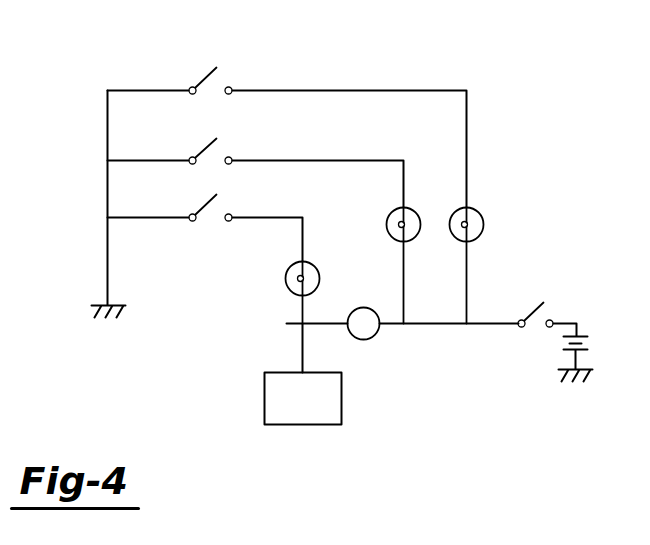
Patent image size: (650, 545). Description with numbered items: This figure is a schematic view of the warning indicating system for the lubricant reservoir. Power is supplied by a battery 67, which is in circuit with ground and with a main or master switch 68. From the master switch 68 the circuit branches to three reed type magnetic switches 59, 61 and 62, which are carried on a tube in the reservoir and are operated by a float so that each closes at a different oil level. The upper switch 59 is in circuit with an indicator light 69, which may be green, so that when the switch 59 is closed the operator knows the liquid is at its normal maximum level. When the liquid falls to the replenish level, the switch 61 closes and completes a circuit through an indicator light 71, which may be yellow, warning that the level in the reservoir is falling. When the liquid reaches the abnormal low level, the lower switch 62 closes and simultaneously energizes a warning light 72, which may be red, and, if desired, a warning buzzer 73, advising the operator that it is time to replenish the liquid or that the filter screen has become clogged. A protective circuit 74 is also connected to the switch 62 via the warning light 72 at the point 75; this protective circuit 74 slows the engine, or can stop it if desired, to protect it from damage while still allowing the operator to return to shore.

The reed type magnetic switch 59 is at (216, 66).
The reed type magnetic switch 61 is at (212, 139).
The reed type magnetic switch 62 is at (212, 194).
The battery 67 is at (585, 333).
The main or master switch 68 is at (540, 300).
The indicator light 69 is at (480, 213).
The indicator light 71 is at (415, 211).
The warning light 72 is at (312, 264).
The warning buzzer 73 is at (375, 335).
The protective circuit 74 is at (340, 400).
The connection point 75 is at (296, 322).